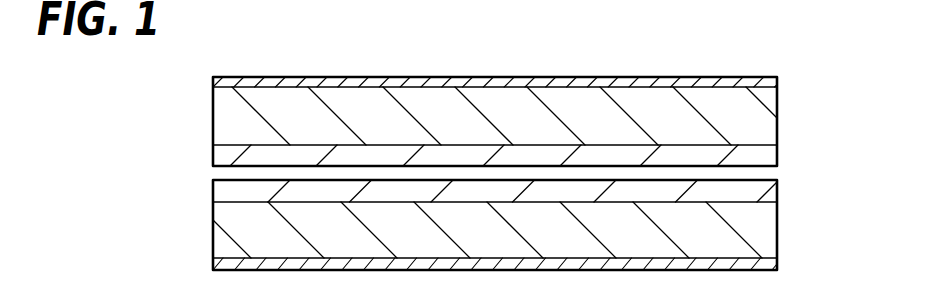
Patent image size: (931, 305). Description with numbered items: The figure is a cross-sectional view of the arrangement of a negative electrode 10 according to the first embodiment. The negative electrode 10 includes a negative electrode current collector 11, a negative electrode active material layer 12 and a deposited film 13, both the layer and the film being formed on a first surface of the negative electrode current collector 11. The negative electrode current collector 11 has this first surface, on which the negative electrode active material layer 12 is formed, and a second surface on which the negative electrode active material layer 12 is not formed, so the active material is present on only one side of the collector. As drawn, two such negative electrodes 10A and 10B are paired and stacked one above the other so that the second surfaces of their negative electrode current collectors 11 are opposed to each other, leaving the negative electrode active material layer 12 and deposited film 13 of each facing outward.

The negative electrode 10 is at (545, 172).
The negative electrode 10A is at (780, 73).
The negative electrode 10B is at (780, 177).
The negative electrode current collector 11 is at (225, 191).
The negative electrode active material layer 12 is at (222, 115).
The deposited film 13 is at (213, 80).